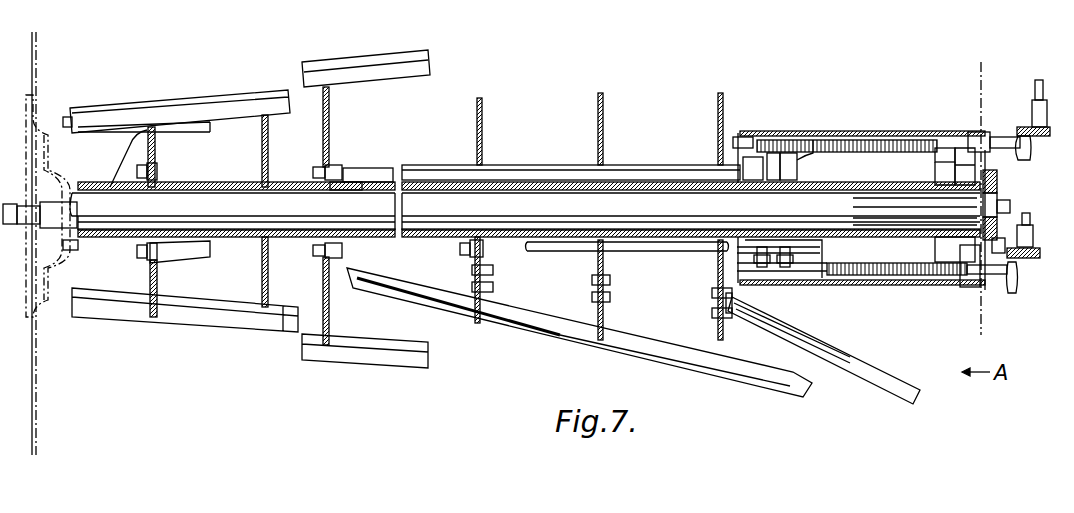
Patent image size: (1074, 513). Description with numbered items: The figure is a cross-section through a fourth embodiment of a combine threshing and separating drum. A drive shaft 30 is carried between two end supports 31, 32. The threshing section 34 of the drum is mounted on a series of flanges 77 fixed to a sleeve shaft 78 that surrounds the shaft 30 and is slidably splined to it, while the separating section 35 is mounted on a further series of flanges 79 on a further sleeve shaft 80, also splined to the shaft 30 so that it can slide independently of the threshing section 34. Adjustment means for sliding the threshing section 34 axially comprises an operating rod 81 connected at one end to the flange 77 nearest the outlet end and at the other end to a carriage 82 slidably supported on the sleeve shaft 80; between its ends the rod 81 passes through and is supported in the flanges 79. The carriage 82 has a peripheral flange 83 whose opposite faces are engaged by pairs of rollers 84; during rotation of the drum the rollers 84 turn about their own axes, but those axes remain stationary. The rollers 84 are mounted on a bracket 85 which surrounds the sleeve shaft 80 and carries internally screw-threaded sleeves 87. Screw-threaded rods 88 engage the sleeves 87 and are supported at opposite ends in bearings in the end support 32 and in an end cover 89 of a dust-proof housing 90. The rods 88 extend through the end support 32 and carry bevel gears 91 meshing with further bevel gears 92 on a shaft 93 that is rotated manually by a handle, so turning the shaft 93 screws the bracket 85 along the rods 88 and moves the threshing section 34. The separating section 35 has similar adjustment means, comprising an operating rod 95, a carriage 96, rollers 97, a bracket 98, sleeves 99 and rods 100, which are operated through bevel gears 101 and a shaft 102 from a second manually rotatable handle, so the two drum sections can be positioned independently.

The drive shaft 30 is at (240, 200).
The end support 31 is at (39, 363).
The end support 32 is at (980, 322).
The threshing section 34 is at (145, 90).
The separating section 35 is at (590, 358).
The flanges 77 is at (262, 150).
The sleeve shaft 78 is at (205, 248).
The flanges 79 is at (483, 128).
The sleeve shaft 80 is at (632, 167).
The operating rod 81 is at (369, 167).
The carriage 82 is at (765, 156).
The peripheral flange 83 is at (783, 152).
The rollers 84 is at (785, 268).
The bracket 85 is at (815, 150).
The screw-threaded sleeves 87 is at (800, 158).
The screw-threaded rods 88 is at (863, 138).
The end cover 89 is at (735, 145).
The dust-proof housing 90 is at (890, 275).
The bevel gears 91 is at (1030, 151).
The bevel gears 92 is at (1020, 127).
The shaft 93 is at (1036, 106).
The operating rod 95 is at (660, 252).
The carriage 96 is at (953, 278).
The rollers 97 is at (938, 150).
The bracket 98 is at (958, 150).
The sleeves 99 is at (936, 282).
The rods 100 is at (853, 273).
The bevel gears 101 is at (1028, 268).
The shaft 102 is at (1027, 212).